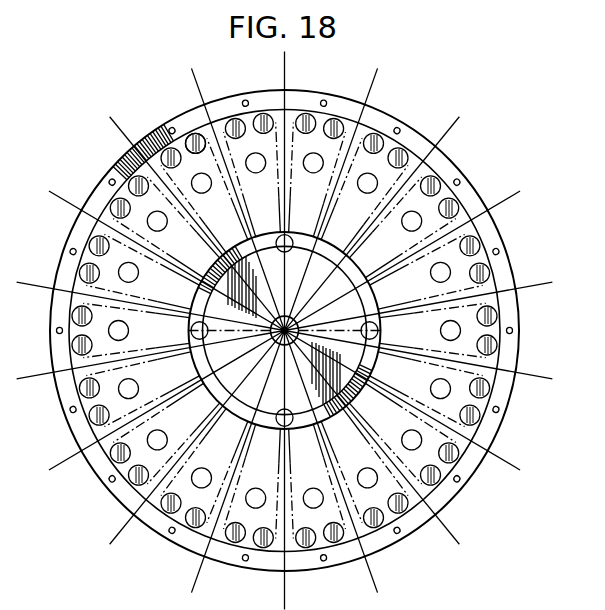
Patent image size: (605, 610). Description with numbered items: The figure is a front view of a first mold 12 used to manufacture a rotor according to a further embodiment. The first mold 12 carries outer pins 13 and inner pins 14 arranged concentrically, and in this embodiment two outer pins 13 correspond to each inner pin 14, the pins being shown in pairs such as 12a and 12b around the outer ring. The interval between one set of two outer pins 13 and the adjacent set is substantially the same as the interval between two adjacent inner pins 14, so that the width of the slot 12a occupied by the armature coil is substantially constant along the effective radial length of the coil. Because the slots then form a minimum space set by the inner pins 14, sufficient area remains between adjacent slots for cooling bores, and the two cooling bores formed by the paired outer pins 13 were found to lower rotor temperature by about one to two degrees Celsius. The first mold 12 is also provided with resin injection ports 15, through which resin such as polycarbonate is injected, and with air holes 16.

The first mold 12 is at (90, 243).
The slot 12a is at (377, 134).
The second ball of pair 12b is at (405, 151).
The outer pins 13 is at (196, 133).
The inner pins 14 is at (285, 331).
The resin injection ports 15 is at (205, 192).
The air holes 16 is at (285, 331).